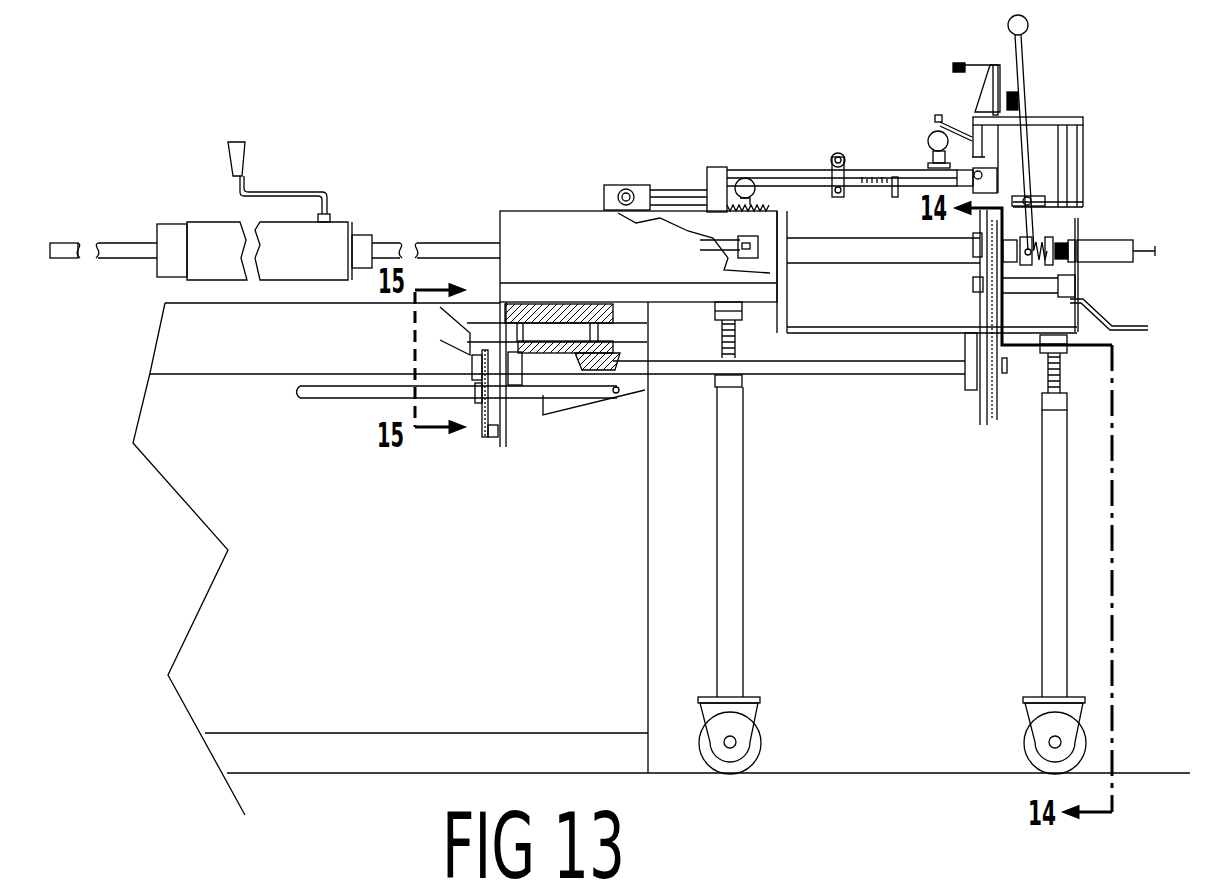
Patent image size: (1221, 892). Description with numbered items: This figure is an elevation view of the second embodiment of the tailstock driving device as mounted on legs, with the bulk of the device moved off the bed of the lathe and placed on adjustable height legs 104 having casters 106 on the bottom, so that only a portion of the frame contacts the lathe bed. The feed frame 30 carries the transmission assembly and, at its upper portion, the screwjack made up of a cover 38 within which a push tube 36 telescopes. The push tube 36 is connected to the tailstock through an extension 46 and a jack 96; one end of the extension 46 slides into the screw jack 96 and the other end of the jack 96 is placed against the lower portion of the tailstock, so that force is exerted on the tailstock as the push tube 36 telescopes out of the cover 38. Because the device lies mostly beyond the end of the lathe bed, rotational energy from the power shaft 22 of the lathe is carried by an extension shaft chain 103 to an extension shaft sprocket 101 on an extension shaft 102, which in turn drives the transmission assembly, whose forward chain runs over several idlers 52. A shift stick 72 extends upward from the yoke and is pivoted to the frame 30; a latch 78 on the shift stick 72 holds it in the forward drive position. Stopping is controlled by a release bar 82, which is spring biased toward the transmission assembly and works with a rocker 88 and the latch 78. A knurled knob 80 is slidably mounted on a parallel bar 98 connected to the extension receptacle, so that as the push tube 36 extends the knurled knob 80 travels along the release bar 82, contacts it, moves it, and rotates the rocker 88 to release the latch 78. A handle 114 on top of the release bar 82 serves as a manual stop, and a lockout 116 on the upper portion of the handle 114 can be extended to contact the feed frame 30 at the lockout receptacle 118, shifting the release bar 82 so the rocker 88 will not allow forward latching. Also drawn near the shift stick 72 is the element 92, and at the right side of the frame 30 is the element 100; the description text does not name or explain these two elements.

The power shaft 22 is at (345, 398).
The feed frame 30 is at (552, 223).
The push tube 36 is at (712, 233).
The cover 38 is at (845, 257).
The extension 46 is at (127, 248).
The idlers 52 is at (497, 435).
The shift stick 72 is at (1024, 53).
The latch 78 is at (1020, 230).
The knurled knob 80 is at (733, 178).
The release bar 82 is at (800, 178).
The rocker 88 is at (997, 167).
The handle 92 is at (982, 97).
The jack 96 is at (292, 230).
The parallel bar 98 is at (663, 188).
The bracket 100 is at (1115, 328).
The extension shaft sprocket 101 is at (487, 352).
The extension shaft 102 is at (670, 367).
The extension shaft chain 103 is at (480, 415).
The adjustable height legs 104 is at (732, 543).
The casters 106 is at (743, 722).
The handle 114 is at (928, 140).
The lockout 116 is at (962, 127).
The lockout receptacle 118 is at (722, 163).